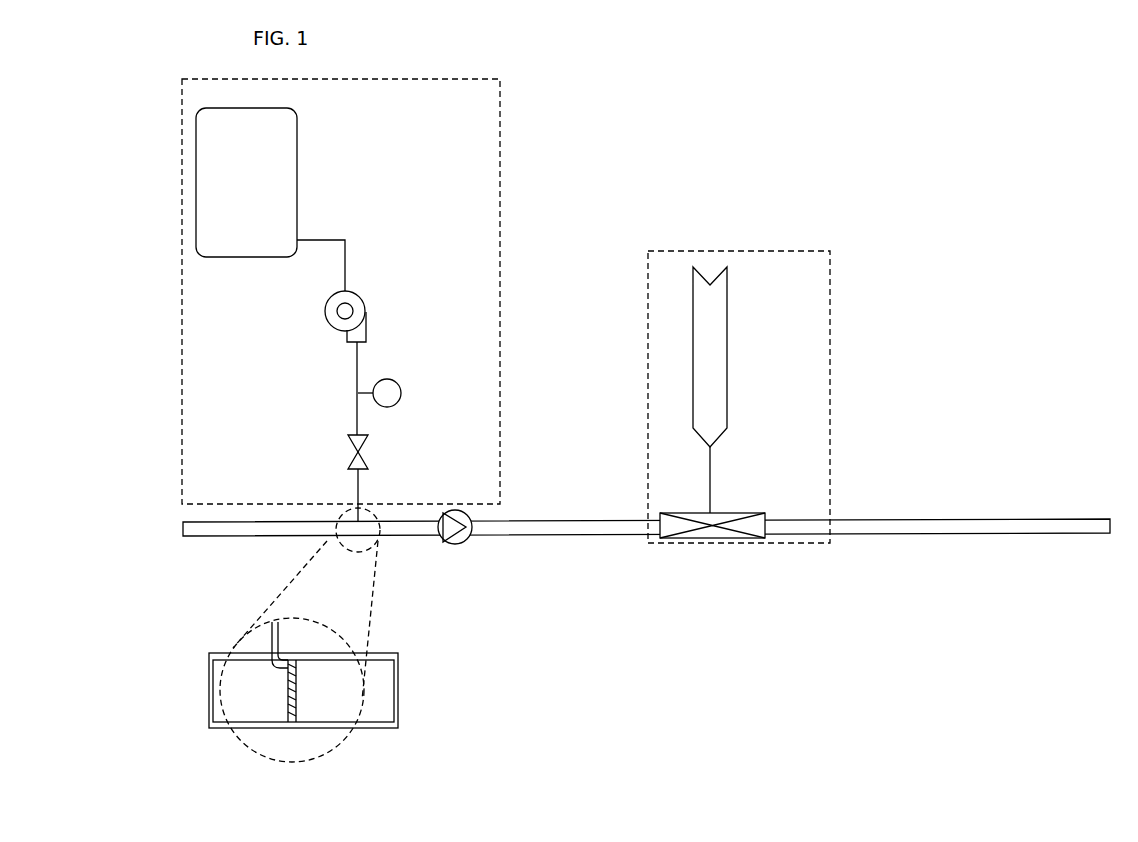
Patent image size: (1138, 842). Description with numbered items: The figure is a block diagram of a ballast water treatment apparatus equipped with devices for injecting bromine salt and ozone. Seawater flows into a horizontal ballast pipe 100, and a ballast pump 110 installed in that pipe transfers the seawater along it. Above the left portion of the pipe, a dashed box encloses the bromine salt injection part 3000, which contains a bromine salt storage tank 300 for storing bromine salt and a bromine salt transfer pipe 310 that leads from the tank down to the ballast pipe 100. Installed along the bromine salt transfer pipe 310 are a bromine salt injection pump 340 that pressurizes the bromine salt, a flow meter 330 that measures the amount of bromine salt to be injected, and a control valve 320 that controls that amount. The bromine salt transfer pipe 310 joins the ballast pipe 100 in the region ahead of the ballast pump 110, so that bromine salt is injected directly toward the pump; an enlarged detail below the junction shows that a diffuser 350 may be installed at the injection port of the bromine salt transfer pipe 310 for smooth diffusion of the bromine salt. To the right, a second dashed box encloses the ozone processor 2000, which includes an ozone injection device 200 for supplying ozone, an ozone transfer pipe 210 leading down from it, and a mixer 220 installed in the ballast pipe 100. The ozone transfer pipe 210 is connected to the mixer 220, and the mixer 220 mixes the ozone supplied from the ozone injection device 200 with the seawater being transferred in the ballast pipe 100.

The bromine salt injection part 3000 is at (500, 105).
The bromine salt storage tank 300 is at (297, 145).
The bromine salt transfer pipe 310 is at (345, 243).
The bromine salt injection pump 340 is at (366, 300).
The flow meter 330 is at (401, 392).
The control valve 320 is at (360, 452).
The ballast pipe 100 is at (375, 728).
The ballast pump 110 is at (460, 545).
The diffuser 350 is at (298, 723).
The ozone processor 2000 is at (830, 290).
The ozone injection device 200 is at (727, 345).
The ozone transfer pipe 210 is at (712, 472).
The mixer 220 is at (718, 538).